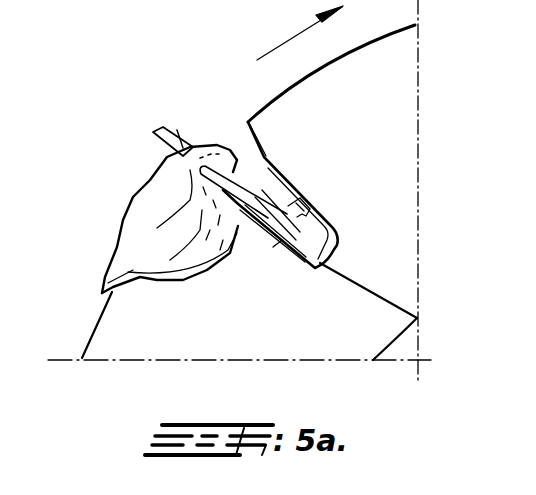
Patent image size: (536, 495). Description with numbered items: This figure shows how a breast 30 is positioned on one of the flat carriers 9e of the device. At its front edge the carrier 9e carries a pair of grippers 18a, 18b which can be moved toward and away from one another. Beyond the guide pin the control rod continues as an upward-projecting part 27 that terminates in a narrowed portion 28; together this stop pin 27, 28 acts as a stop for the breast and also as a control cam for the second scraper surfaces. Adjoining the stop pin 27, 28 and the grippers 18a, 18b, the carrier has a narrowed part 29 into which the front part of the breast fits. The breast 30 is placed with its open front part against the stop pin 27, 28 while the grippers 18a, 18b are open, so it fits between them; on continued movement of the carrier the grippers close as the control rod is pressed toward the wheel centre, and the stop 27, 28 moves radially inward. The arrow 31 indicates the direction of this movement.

The flat carrier 9e is at (112, 329).
The gripper 18a is at (255, 202).
The gripper 18b is at (237, 185).
The upward-projecting part 27 is at (195, 144).
The narrowed portion 28 is at (173, 127).
The narrowed part 29 is at (242, 233).
The breast 30 is at (147, 202).
The direction of rotation 31 is at (293, 35).